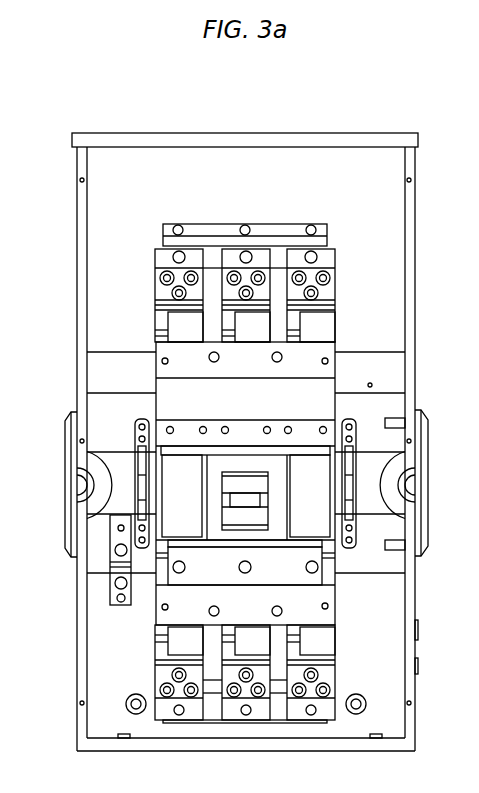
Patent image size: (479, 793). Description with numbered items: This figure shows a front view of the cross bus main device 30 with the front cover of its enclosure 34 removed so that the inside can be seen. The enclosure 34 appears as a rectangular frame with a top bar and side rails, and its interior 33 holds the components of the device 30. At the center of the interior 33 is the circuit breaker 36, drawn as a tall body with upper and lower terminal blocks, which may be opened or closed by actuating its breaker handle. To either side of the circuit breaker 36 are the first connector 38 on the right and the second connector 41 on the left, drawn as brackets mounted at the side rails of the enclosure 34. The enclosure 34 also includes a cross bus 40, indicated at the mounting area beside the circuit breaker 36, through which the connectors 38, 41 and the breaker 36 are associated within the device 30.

The device 30 is at (231, 109).
The interior 33 is at (148, 158).
The enclosure 34 is at (416, 182).
The circuit breaker 36 is at (303, 590).
The first connector 38 is at (429, 447).
The cross bus 40 is at (393, 403).
The second connector 41 is at (66, 440).